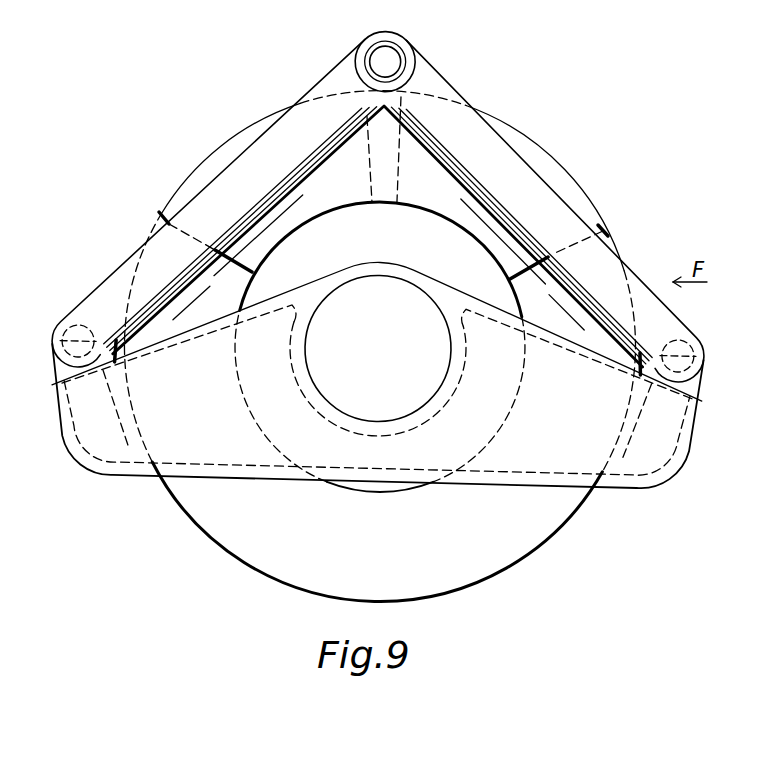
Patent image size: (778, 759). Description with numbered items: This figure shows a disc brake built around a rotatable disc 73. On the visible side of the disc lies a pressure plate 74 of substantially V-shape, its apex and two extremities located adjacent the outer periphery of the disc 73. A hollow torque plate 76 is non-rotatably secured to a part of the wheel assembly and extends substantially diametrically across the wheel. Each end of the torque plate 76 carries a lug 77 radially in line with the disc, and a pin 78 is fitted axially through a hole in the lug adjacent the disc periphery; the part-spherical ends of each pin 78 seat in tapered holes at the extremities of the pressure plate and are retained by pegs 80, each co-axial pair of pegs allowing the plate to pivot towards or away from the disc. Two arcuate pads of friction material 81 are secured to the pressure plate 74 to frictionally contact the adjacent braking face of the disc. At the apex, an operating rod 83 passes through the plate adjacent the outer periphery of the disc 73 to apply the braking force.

The rotatable disc 73 is at (498, 560).
The pressure plate 74 is at (228, 173).
The hollow torque plate 76 is at (491, 480).
The lug 77 is at (60, 373).
The pin 78 is at (80, 320).
The peg 80 is at (104, 332).
The arcuate pad of friction material 81 is at (368, 136).
The operating rod 83 is at (388, 60).